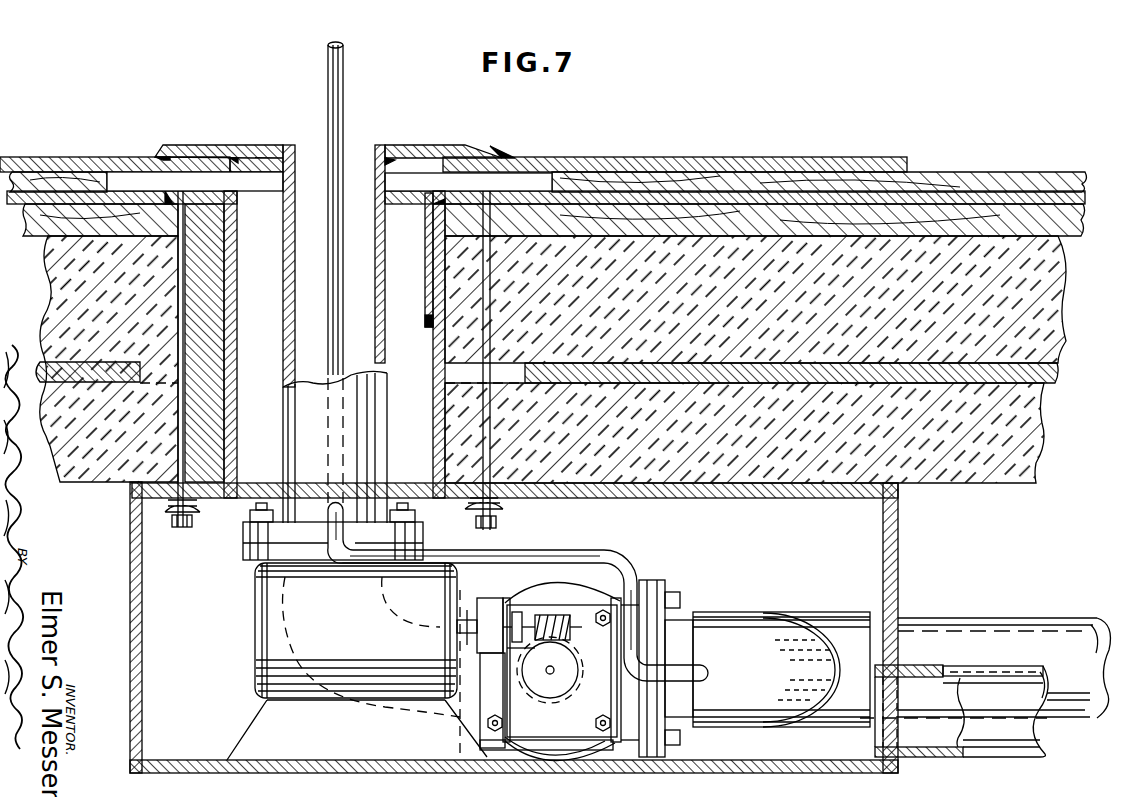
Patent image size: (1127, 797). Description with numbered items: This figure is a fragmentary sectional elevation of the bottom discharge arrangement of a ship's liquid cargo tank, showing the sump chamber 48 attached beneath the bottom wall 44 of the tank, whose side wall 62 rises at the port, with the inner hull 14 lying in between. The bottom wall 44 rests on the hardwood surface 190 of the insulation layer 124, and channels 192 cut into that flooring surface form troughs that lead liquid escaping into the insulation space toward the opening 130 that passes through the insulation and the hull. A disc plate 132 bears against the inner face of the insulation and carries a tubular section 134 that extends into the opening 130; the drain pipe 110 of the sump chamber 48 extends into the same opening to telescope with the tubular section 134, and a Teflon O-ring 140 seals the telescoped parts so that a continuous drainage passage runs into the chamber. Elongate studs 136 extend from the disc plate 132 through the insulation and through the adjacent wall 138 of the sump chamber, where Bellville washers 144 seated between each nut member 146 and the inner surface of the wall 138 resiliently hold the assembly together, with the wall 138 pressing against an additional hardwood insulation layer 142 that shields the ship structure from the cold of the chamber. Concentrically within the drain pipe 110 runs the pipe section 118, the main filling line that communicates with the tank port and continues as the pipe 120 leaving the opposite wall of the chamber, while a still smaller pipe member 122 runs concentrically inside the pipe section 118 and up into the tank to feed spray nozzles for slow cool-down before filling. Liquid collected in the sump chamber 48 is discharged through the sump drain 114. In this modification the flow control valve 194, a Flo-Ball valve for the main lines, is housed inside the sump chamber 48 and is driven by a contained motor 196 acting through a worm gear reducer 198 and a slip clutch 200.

The inner hull 14 is at (712, 350).
The bottom wall 44 is at (714, 157).
The sump chamber 48 is at (898, 542).
The side wall 62 is at (468, 145).
The drain pipe 110 is at (237, 443).
The sump drain 114 is at (1013, 666).
The pipe section 118 is at (387, 412).
The pipe 120 is at (1045, 618).
The pipe member 122 is at (344, 94).
The insulation layer 124 is at (647, 300).
The opening 130 is at (274, 242).
The disc plate 132 is at (138, 197).
The tubular section 134 is at (425, 282).
The studs 136 is at (177, 310).
The wall 138 is at (745, 498).
The O-ring 140 is at (425, 326).
The insulation layer 142 is at (742, 444).
The Bellville washers 144 is at (203, 512).
The nut member 146 is at (174, 527).
The hardwood surface 190 is at (735, 228).
The channels 192 is at (83, 195).
The flow control valve 194 is at (578, 578).
The motor 196 is at (357, 626).
The gear reducer 198 is at (562, 603).
The slip clutch 200 is at (487, 614).